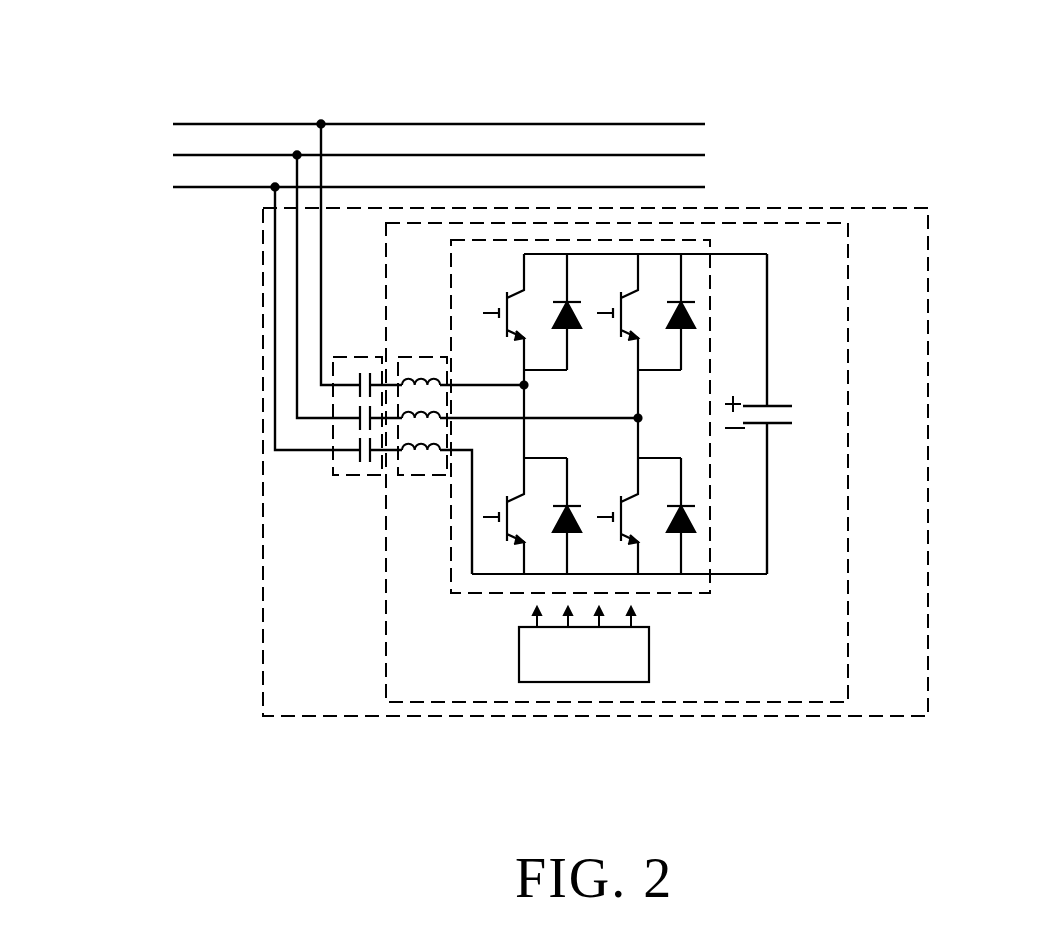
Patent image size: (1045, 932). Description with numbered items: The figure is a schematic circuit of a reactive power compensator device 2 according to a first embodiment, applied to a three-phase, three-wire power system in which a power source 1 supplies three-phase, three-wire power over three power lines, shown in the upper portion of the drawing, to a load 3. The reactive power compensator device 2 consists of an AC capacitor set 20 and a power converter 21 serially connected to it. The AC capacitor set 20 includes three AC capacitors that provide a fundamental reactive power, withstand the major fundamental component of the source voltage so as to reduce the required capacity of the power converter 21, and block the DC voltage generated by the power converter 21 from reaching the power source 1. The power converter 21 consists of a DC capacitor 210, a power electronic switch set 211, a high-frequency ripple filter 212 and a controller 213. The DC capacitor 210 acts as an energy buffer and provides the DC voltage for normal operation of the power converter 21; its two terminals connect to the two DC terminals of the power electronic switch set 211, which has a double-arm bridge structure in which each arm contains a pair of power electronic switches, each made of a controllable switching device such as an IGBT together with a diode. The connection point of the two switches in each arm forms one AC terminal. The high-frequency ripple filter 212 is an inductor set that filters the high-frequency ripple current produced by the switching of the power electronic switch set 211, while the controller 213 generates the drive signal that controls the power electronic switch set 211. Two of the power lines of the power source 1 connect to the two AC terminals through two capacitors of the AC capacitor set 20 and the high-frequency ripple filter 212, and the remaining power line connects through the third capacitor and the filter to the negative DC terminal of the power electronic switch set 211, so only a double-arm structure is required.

The power source 1 is at (160, 103).
The load 3 is at (743, 103).
The reactive power compensator device 2 is at (876, 716).
The power converter 21 is at (773, 702).
The AC capacitor set 20 is at (338, 475).
The high-frequency ripple filter 212 is at (427, 475).
The power electronic switch set 211 is at (707, 548).
The DC capacitor 210 is at (773, 430).
The controller 213 is at (649, 657).